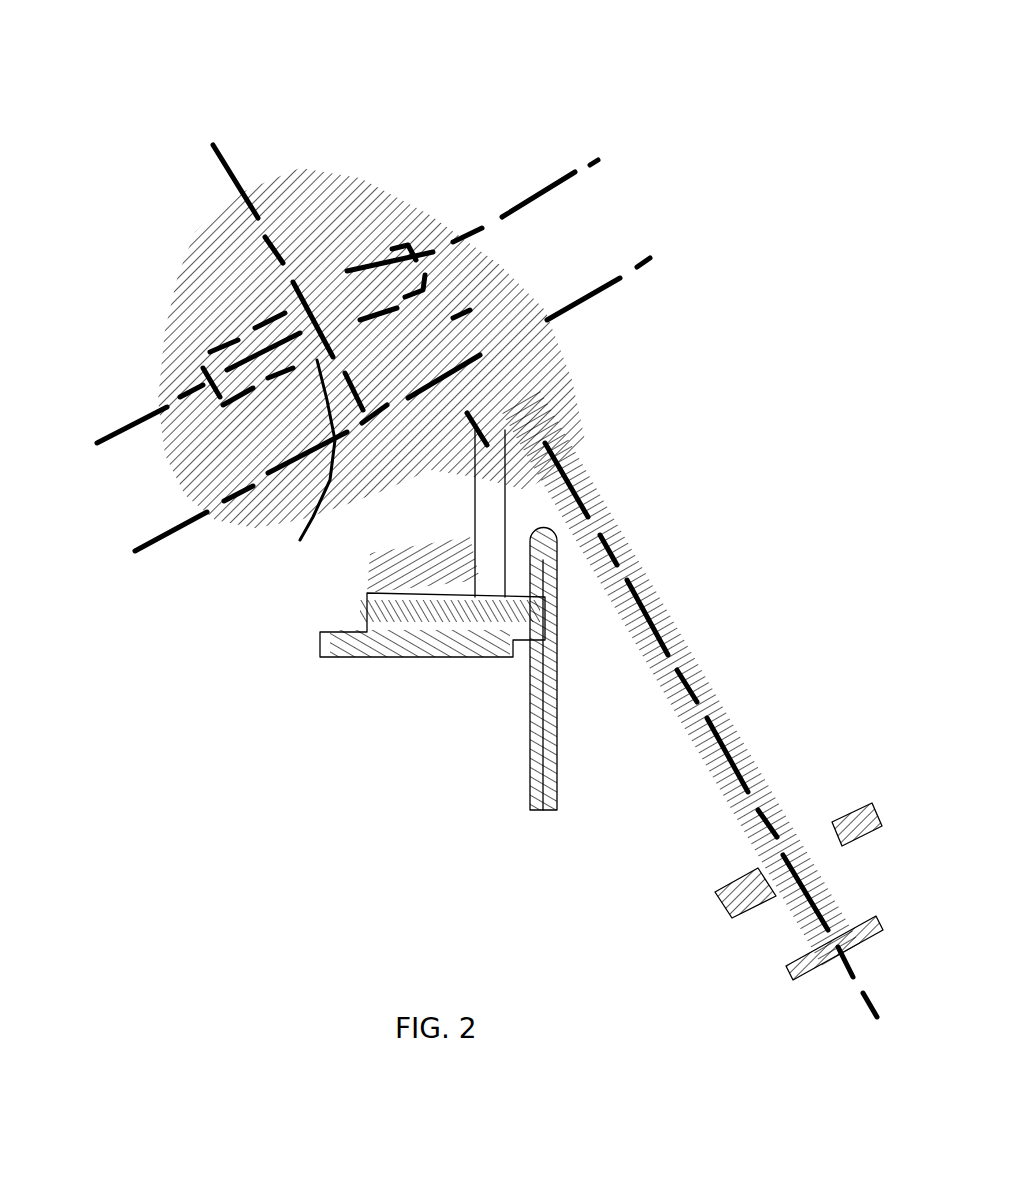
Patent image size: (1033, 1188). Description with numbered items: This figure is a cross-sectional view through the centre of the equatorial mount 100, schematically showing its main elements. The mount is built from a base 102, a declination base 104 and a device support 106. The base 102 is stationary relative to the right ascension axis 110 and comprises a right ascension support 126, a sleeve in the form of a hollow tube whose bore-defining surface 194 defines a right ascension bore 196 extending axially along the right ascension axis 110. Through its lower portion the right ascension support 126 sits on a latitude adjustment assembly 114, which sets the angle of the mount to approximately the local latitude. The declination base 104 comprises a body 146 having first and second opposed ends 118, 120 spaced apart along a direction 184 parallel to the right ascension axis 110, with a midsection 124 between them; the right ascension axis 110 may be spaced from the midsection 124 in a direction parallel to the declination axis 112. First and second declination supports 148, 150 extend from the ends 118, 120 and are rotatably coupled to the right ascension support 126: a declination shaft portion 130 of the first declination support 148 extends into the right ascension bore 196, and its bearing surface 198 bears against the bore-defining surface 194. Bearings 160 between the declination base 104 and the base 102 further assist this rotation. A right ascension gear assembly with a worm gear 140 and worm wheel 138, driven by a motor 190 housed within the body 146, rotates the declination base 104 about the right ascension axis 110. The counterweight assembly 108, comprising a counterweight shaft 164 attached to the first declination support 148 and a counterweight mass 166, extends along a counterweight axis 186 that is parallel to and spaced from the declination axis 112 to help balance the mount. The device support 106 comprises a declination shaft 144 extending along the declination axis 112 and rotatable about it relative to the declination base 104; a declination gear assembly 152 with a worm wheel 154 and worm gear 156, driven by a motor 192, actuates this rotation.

The equatorial mount 100 is at (104, 69).
The base 102 is at (222, 561).
The declination base 104 is at (264, 475).
The device support 106 is at (133, 276).
The counterweight assembly 108 is at (711, 730).
The right ascension axis 110 is at (642, 289).
The declination axis 112 is at (272, 187).
The latitude adjustment assembly 114 is at (317, 602).
The first opposed end 118 is at (542, 245).
The second opposed end 120 is at (92, 439).
The midsection 124 is at (143, 267).
The right ascension support 126 is at (222, 439).
The declination shaft portion 130 is at (557, 358).
The worm wheel 138 is at (589, 417).
The worm gear 140 is at (477, 219).
The declination shaft 144 is at (357, 241).
The body 146 is at (517, 296).
The first declination support 148 is at (553, 392).
The second declination support 150 is at (150, 493).
The declination gear assembly 152 is at (406, 208).
The worm wheel 154 is at (166, 302).
The worm gear 156 is at (135, 347).
The bearings 160 is at (178, 468).
The counterweight shaft 164 is at (628, 725).
The counterweight mass 166 is at (692, 939).
The direction 184 is at (590, 189).
The counterweight axis 186 is at (723, 612).
The motor 190 is at (498, 277).
The motor 192 is at (115, 380).
The bore-defining surface 194 is at (182, 485).
The right ascension bore 196 is at (127, 567).
The bearing surface 198 is at (546, 346).